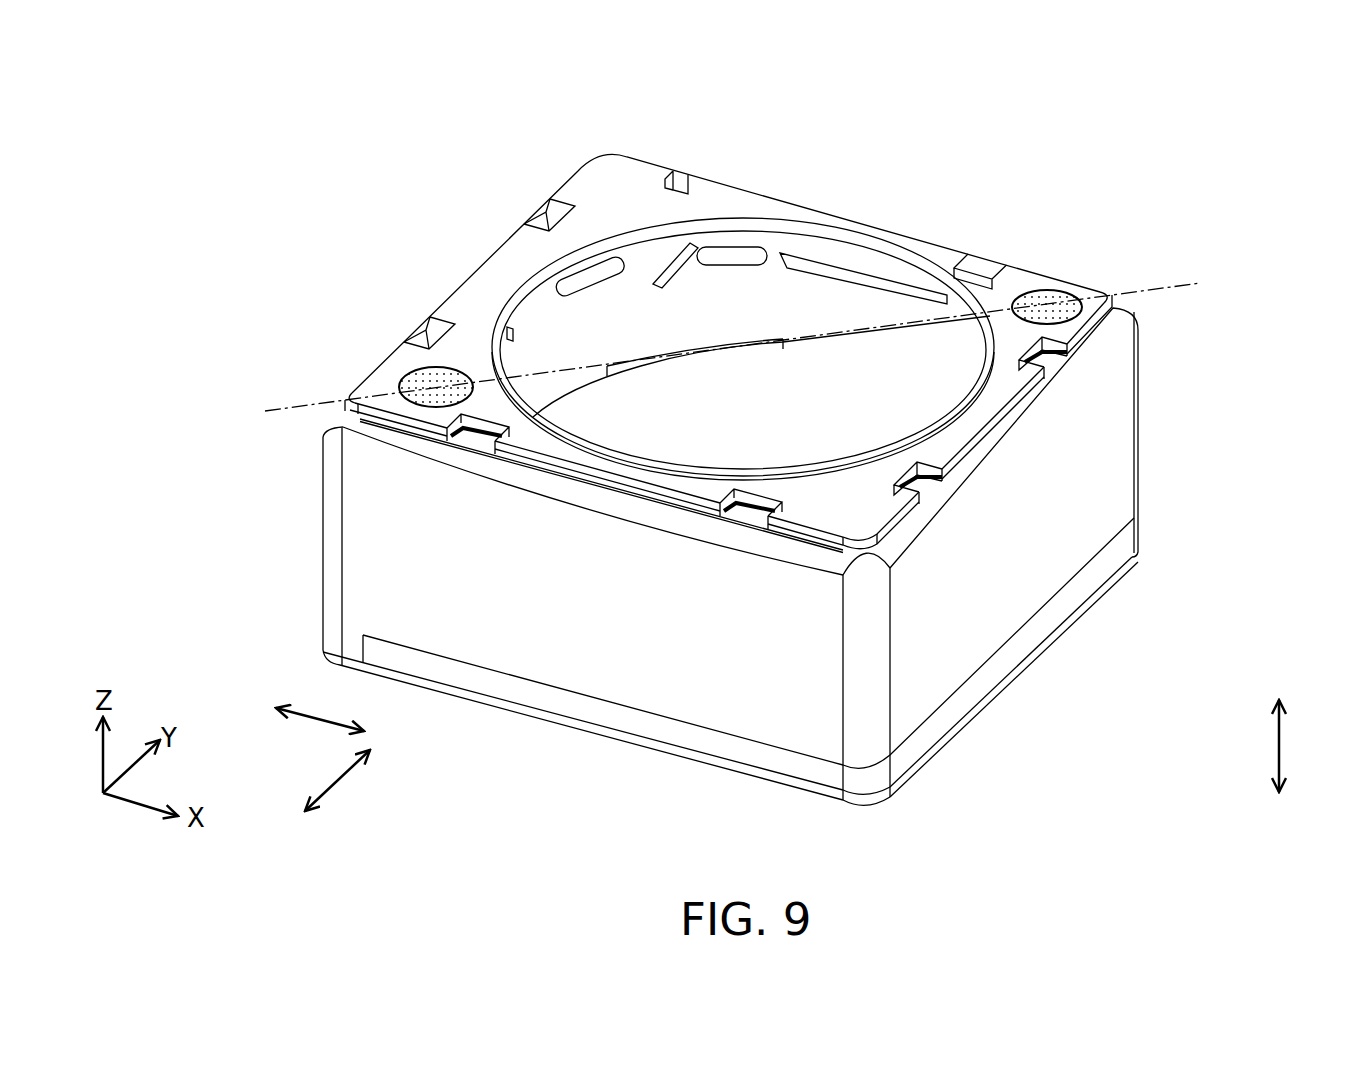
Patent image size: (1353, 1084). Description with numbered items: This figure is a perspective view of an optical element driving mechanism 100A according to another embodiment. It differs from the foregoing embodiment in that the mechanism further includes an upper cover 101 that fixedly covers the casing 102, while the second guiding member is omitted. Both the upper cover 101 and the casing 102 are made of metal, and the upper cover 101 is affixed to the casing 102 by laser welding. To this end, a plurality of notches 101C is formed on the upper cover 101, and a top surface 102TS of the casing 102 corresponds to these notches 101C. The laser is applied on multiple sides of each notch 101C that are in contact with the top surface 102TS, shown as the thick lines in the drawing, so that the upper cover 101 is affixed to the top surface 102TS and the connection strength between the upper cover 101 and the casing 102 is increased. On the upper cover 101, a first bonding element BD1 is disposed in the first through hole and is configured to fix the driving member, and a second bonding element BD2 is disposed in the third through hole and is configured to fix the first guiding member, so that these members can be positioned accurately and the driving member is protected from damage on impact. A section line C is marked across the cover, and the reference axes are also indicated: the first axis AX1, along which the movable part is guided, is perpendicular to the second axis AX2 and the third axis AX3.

The optical element driving mechanism 100A is at (345, 86).
The upper cover 101 is at (715, 490).
The notches 101C is at (478, 441).
The casing 102 is at (785, 556).
The top surface 102TS is at (1048, 360).
The first bonding element BD1 is at (430, 380).
The second bonding element BD2 is at (1037, 297).
The section line C is at (1197, 282).
The first axis AX1 is at (1278, 764).
The second axis AX2 is at (286, 712).
The third axis AX3 is at (350, 780).